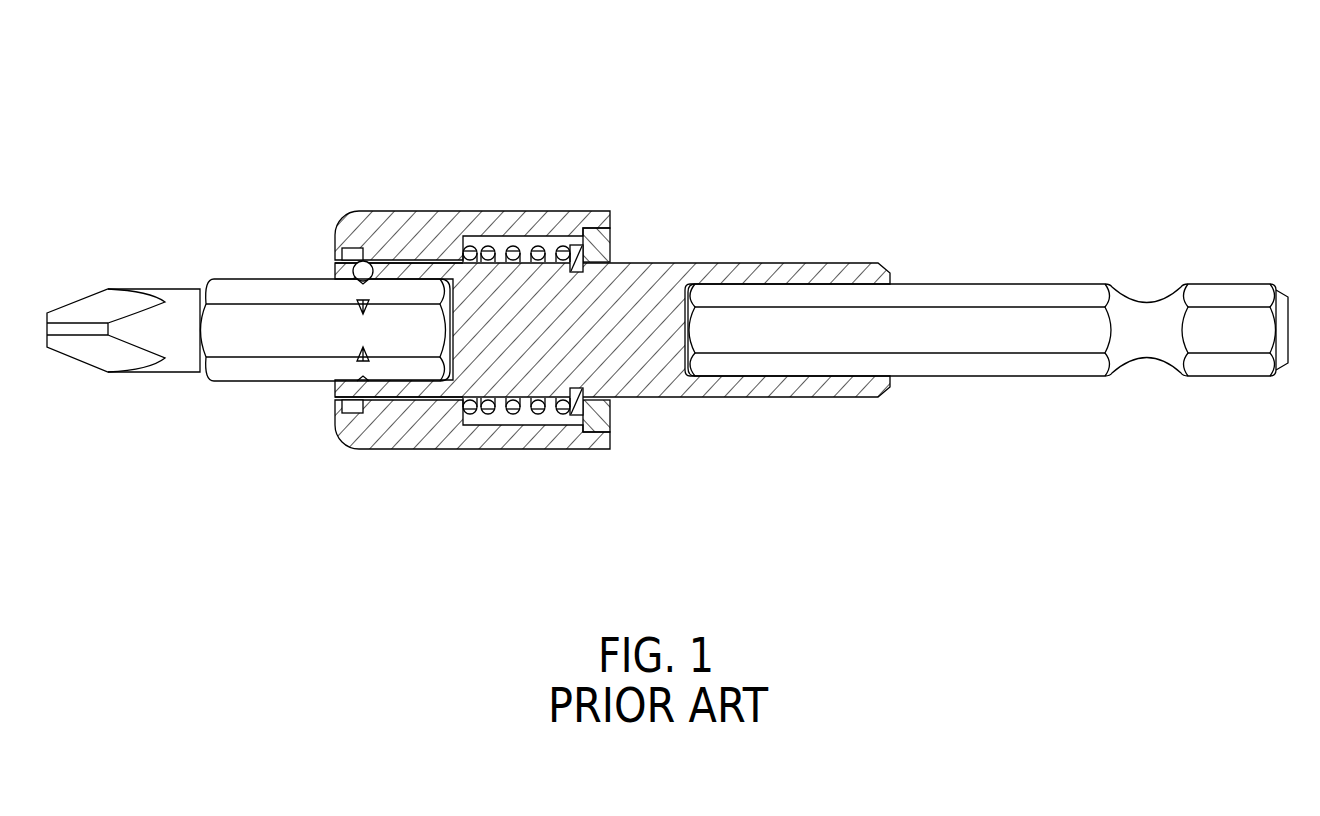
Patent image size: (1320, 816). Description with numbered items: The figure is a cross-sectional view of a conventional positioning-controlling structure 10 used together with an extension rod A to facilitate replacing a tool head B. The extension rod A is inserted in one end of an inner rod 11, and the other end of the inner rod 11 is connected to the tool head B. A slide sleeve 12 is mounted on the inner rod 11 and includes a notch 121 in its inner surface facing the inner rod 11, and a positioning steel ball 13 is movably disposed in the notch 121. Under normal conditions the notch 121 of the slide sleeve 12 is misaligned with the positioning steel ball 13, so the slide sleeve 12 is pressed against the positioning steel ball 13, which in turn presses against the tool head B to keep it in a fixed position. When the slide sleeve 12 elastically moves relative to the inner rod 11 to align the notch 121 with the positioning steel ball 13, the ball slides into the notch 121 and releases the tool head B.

The positioning-controlling structure 10 is at (592, 254).
The inner rod 11 is at (652, 287).
The slide sleeve 12 is at (522, 222).
The notch 121 is at (347, 254).
The positioning steel ball 13 is at (366, 268).
The extension rod A is at (962, 293).
The tool head B is at (272, 292).